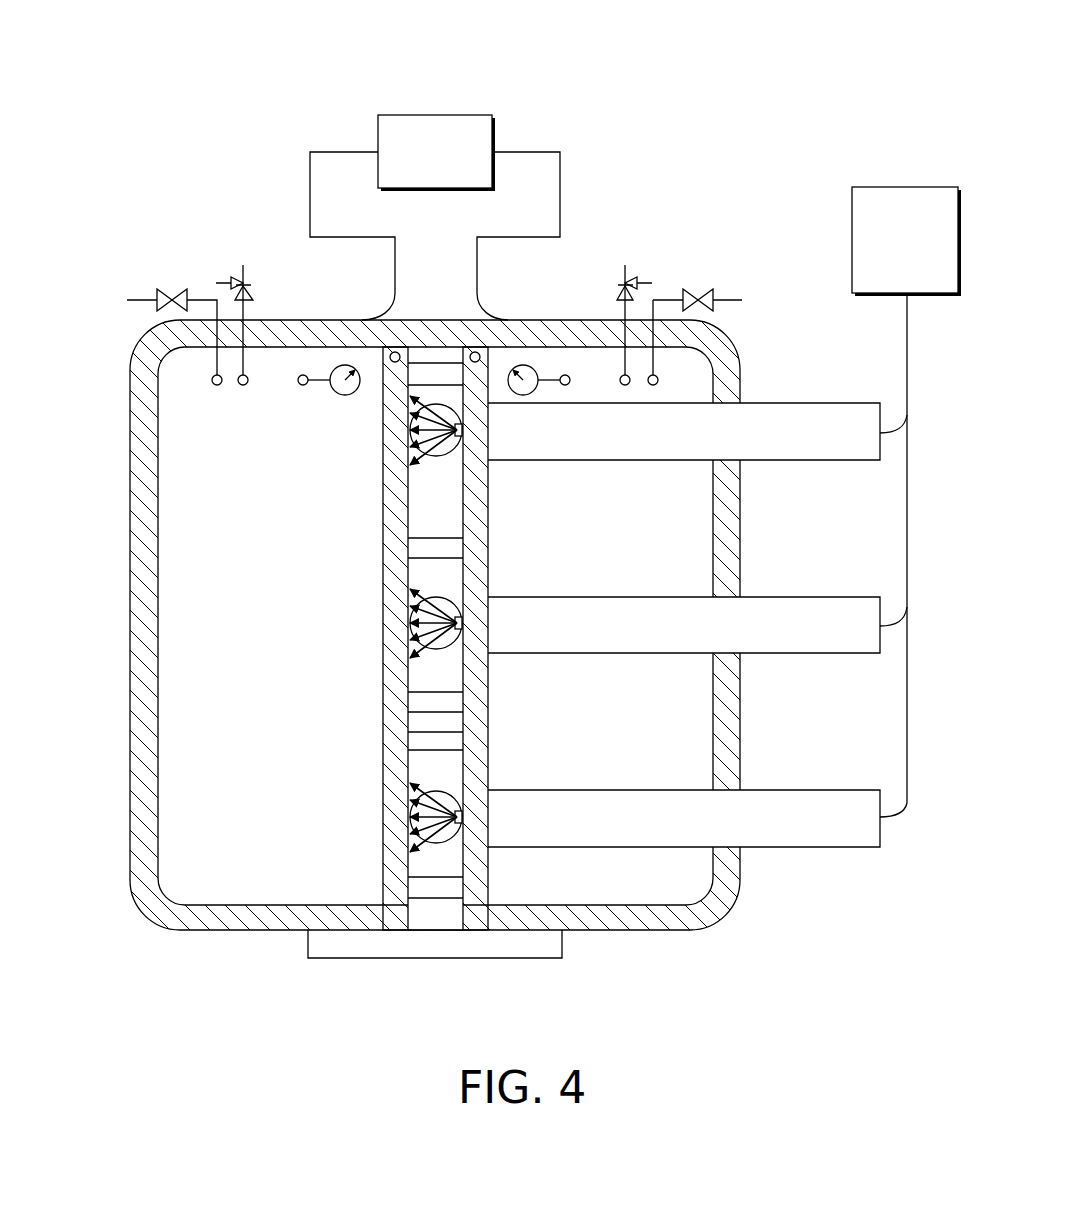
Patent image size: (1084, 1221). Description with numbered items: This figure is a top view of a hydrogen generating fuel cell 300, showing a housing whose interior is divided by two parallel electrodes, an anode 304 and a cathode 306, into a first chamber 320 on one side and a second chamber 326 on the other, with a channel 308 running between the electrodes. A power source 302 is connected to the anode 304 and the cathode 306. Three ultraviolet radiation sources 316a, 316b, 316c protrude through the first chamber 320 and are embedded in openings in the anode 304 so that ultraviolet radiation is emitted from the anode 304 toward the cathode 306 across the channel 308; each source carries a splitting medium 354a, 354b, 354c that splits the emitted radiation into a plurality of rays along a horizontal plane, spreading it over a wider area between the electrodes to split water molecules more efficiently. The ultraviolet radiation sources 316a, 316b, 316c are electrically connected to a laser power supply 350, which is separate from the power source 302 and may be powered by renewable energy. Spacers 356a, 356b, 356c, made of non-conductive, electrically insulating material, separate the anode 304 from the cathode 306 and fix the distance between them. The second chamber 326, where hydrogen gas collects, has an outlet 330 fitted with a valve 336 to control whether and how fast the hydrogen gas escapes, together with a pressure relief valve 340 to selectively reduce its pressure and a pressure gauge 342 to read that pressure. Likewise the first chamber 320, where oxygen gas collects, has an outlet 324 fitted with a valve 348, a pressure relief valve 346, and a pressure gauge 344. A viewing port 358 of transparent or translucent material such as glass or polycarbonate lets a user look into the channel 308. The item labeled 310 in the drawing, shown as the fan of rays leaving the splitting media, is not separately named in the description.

The fuel cell 300 is at (799, 60).
The power source 302 is at (438, 115).
The anode 304 is at (490, 372).
The cathode 306 is at (382, 368).
The channel 308 is at (457, 517).
The laser light 310 is at (418, 775).
The ultraviolet radiation source 316a is at (758, 403).
The ultraviolet radiation source 316b is at (758, 597).
The ultraviolet radiation source 316c is at (758, 790).
The first chamber 320 is at (628, 561).
The outlet 324 is at (658, 380).
The second chamber 326 is at (293, 642).
The outlet 330 is at (212, 383).
The valve 336 is at (157, 292).
The pressure relief valve 340 is at (248, 282).
The pressure gauge 342 is at (333, 393).
The pressure gauge 344 is at (537, 371).
The pressure relief valve 346 is at (640, 280).
The valve 348 is at (715, 292).
The laser power supply 350 is at (907, 187).
The splitting medium 354a is at (460, 434).
The splitting medium 354b is at (460, 628).
The splitting medium 354c is at (460, 813).
The spacer 356a is at (420, 550).
The spacer 356b is at (420, 702).
The spacer 356c is at (420, 742).
The viewing port 358 is at (492, 947).